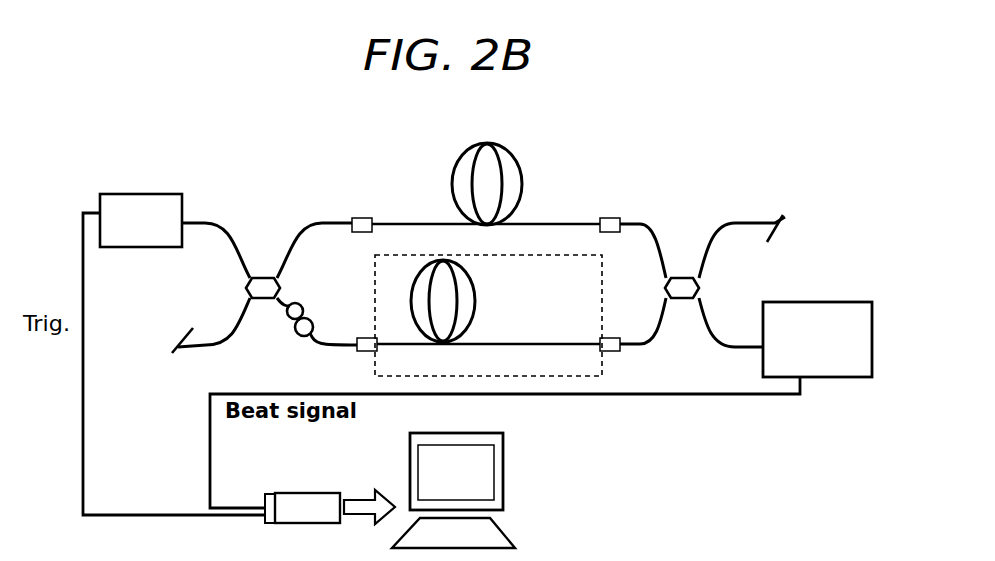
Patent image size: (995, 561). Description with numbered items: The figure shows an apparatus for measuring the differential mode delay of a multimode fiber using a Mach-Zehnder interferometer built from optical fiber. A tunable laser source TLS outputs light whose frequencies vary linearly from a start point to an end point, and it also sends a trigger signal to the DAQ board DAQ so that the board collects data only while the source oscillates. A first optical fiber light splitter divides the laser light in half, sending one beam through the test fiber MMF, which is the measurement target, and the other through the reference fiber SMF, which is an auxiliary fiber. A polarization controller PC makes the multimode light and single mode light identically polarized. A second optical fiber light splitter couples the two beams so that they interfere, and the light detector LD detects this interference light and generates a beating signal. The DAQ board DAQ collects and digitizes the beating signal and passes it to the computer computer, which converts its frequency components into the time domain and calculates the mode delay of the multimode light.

The tunable laser source TLS is at (141, 220).
The polarization controller PC is at (322, 314).
The multimode fiber MMF is at (486, 172).
The single mode fiber SMF is at (488, 315).
The light detector LD is at (817, 339).
The DAQ board DAQ is at (330, 494).
The element computer is at (505, 490).